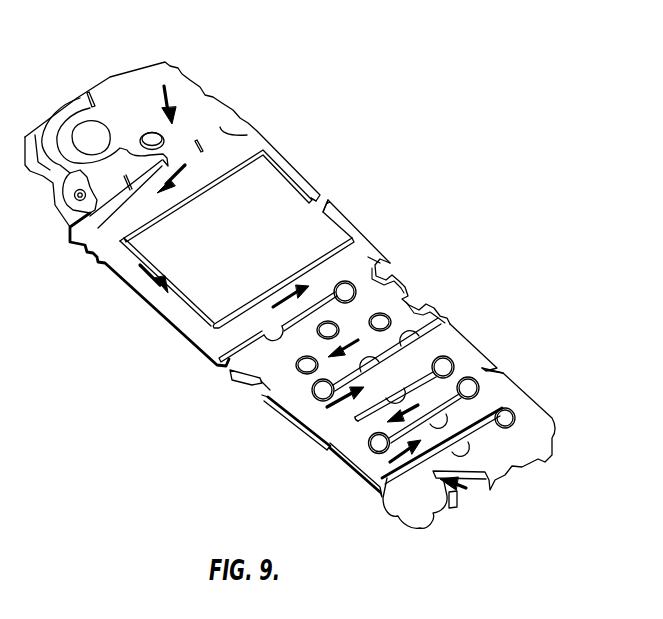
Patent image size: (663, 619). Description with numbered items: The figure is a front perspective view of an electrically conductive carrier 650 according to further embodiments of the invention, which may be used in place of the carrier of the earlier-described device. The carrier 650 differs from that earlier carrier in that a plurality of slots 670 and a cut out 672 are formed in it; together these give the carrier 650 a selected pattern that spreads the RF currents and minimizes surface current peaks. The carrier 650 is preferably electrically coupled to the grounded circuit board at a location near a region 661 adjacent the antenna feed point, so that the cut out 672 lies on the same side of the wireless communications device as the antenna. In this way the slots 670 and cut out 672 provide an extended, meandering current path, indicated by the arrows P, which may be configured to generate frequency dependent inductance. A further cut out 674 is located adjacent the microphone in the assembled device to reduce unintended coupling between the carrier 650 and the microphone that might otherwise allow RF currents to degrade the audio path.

The carrier 650 is at (442, 173).
The region 661 is at (165, 62).
The slots 670 is at (441, 315).
The cut out 672 is at (316, 193).
The further cut out 674 is at (447, 482).
The arrows P is at (160, 95).